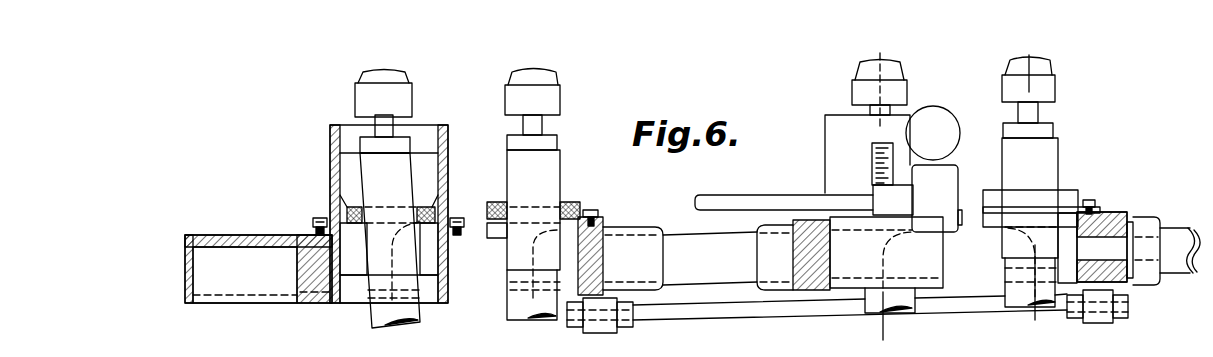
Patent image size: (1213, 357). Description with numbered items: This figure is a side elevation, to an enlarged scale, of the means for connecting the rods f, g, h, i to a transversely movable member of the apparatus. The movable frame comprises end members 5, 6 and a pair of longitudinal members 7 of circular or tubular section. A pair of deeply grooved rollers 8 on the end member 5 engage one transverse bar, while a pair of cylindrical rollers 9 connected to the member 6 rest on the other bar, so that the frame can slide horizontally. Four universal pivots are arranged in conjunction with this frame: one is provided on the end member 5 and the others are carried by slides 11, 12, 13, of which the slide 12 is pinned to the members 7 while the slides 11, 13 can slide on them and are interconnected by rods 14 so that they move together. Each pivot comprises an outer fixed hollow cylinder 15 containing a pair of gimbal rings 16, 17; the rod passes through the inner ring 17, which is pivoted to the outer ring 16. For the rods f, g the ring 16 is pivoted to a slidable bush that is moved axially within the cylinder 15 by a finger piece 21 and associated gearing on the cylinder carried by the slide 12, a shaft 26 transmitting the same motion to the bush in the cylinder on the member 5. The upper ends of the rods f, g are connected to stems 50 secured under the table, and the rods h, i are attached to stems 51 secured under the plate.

The end member 5 is at (268, 235).
The end member 6 is at (890, 313).
The longitudinal members 7 is at (681, 240).
The grooved rollers 8 is at (874, 189).
The cylindrical rollers 9 is at (1030, 187).
The slide 11 is at (630, 231).
The slide 12 is at (800, 222).
The slide 13 is at (1108, 216).
The rods 14 is at (772, 315).
The outer fixed hollow cylinder 15 is at (456, 132).
The gimbal ring 16 is at (340, 200).
The gimbal ring 17 is at (425, 204).
The finger piece 21 is at (950, 130).
The shaft 26 is at (735, 200).
The stem 50 is at (404, 106).
The stem 51 is at (556, 108).
The rod f is at (416, 316).
The rod g is at (898, 318).
The rod h is at (507, 306).
The rod i is at (1010, 286).